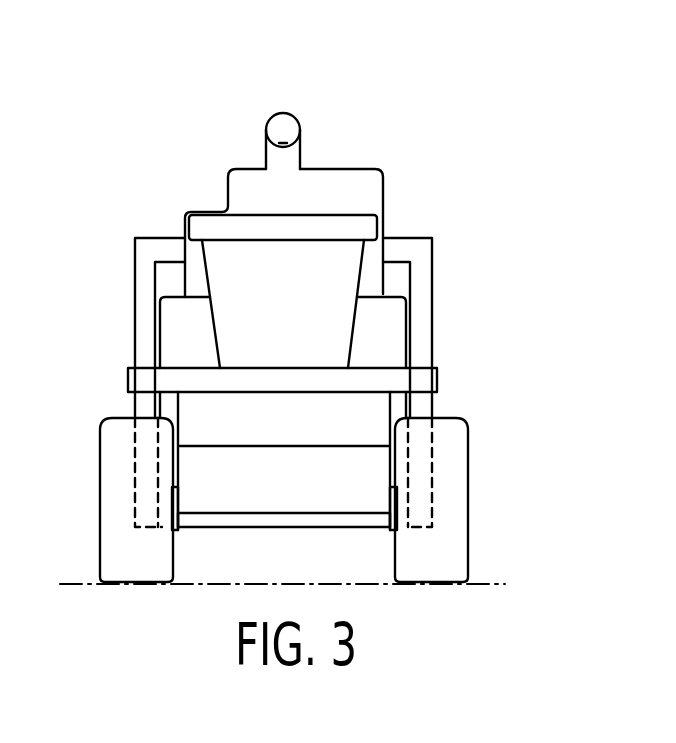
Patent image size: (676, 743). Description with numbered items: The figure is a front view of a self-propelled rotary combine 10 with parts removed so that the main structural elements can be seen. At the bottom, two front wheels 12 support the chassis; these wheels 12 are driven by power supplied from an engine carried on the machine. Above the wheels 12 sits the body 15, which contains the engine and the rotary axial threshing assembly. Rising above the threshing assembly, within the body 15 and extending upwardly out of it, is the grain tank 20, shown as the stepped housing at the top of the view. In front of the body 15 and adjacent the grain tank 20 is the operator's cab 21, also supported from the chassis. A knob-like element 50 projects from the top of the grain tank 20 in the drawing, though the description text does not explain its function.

The combine 10 is at (290, 309).
The front wheels 12 is at (117, 552).
The body 15 is at (170, 333).
The grain tank 20 is at (353, 177).
The operator's cab 21 is at (294, 294).
The handle knob 50 is at (293, 117).